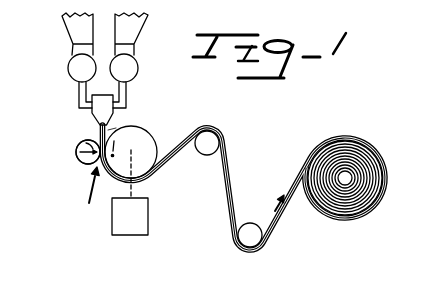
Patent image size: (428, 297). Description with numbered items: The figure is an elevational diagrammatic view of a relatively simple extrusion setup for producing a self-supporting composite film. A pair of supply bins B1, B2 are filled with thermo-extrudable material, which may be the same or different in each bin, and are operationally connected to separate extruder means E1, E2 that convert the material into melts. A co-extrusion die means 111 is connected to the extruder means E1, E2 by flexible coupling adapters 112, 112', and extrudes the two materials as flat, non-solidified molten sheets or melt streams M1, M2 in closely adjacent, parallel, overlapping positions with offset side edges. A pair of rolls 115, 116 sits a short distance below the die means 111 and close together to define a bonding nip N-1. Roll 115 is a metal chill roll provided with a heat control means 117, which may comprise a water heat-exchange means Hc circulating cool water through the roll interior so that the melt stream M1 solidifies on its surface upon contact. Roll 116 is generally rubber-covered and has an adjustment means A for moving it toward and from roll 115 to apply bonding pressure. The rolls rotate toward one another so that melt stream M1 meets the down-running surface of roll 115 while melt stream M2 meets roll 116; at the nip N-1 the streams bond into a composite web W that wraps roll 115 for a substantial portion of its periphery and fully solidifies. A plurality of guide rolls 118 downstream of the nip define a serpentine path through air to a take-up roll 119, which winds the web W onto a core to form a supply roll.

The supply bin B1 is at (137, 32).
The supply bin B2 is at (66, 32).
The extruder means E1 is at (134, 68).
The extruder means E2 is at (69, 69).
The flexible coupling adapter 112 is at (142, 95).
The flexible coupling adapter 112' is at (59, 99).
The co-extrusion die means 111 is at (118, 115).
The melt stream M1 is at (107, 126).
The melt stream M2 is at (100, 131).
The roll 115 is at (146, 172).
The adjustment means A is at (80, 160).
The roll 116 is at (83, 163).
The bonding nip N-1 is at (85, 197).
The water heat-exchange means Hc is at (146, 249).
The heat control means 117 is at (142, 229).
The guide rolls 118 is at (220, 145).
The composite web W is at (232, 183).
The take-up roll 119 is at (344, 180).